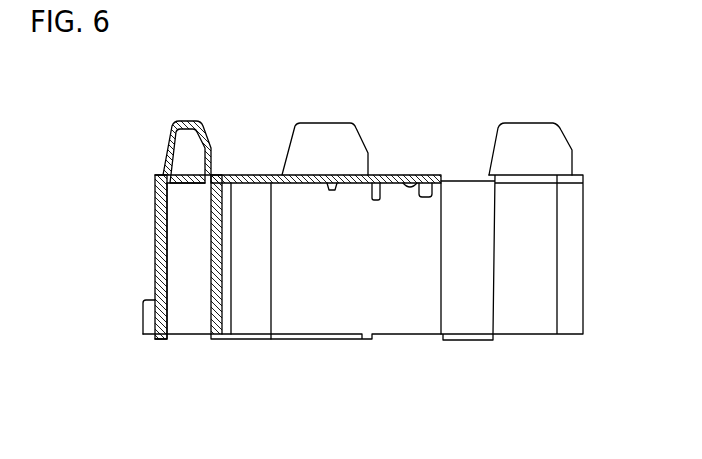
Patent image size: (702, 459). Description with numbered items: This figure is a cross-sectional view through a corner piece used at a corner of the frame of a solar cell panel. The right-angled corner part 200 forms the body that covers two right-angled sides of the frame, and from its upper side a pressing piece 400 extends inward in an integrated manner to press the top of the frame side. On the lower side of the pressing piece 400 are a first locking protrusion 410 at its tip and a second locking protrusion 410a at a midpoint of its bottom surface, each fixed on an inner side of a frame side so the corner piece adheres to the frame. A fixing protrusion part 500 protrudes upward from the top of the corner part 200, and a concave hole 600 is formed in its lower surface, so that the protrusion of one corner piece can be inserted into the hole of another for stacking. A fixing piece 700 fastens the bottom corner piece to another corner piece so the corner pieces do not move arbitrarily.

The right-angled corner part 200 is at (153, 233).
The pressing piece 400 is at (263, 176).
The first locking protrusion 410 is at (381, 194).
The second locking protrusion 410a is at (330, 191).
The fixing protrusion part 500 is at (163, 147).
The concave hole 600 is at (183, 315).
The fixing piece 700 is at (143, 327).